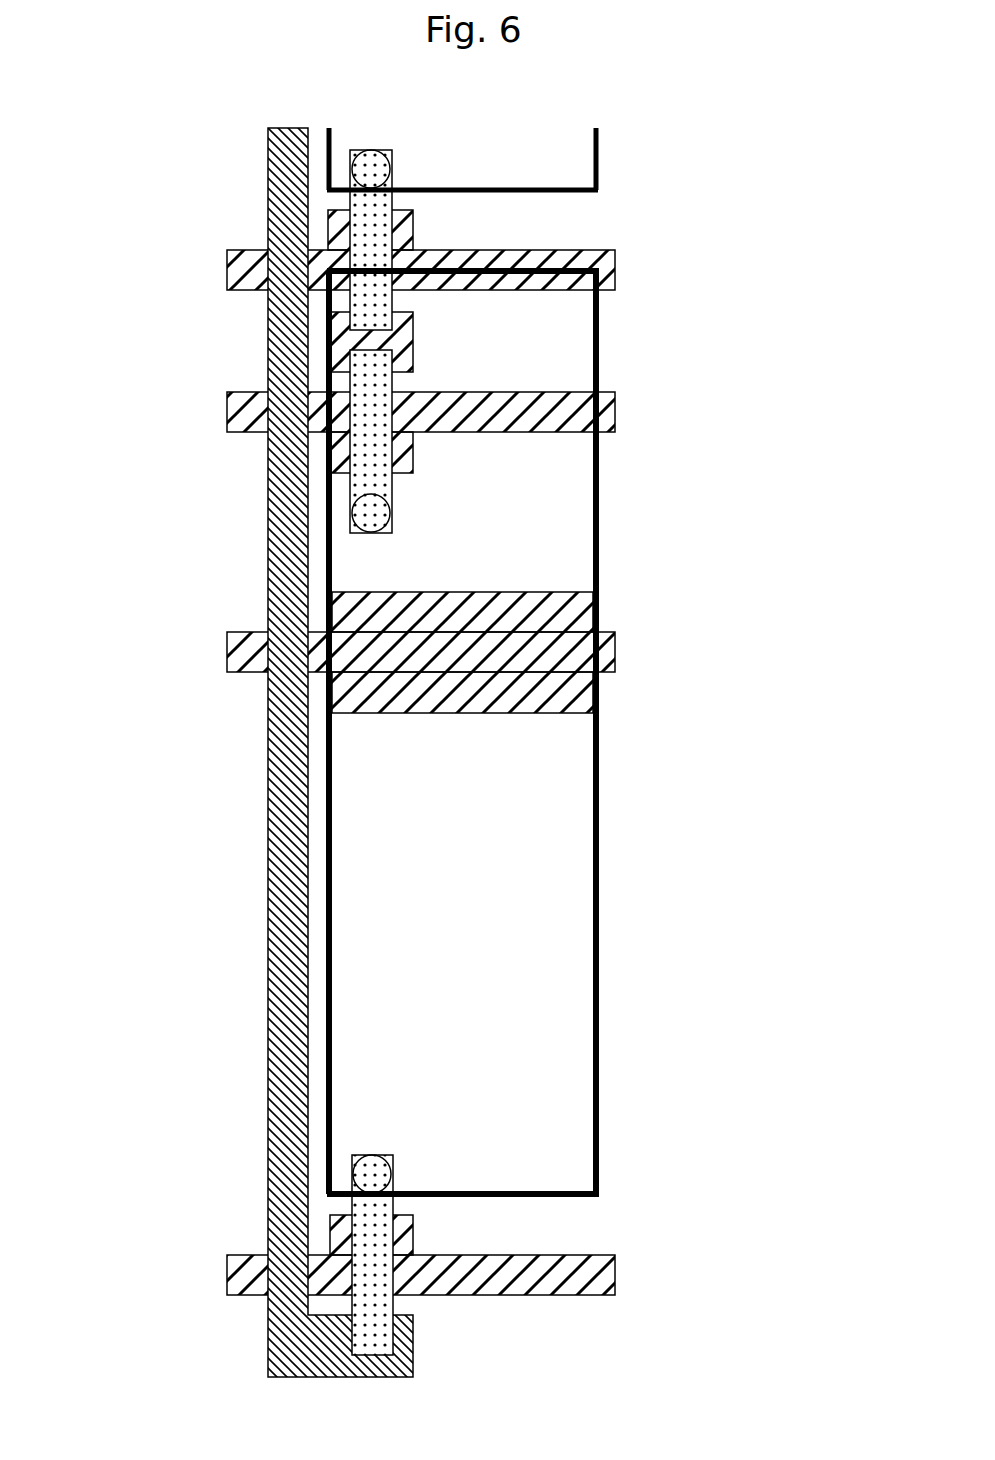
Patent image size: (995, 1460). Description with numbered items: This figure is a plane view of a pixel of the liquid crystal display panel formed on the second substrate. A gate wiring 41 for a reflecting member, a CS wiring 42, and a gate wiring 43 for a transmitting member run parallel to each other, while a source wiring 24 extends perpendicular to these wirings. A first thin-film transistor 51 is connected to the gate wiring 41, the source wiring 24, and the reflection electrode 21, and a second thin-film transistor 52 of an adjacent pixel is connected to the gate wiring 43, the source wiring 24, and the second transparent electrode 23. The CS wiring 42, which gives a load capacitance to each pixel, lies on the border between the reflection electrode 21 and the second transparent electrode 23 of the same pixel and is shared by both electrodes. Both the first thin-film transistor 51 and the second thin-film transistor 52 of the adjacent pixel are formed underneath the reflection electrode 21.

The reflection electrode 21 is at (560, 492).
The second transparent electrode 23 is at (572, 937).
The source wiring 24 is at (290, 659).
The gate wiring for a reflecting member 41 is at (553, 407).
The CS wiring 42 is at (600, 653).
The gate wiring for a transmitting member 43 is at (540, 1270).
The first thin-film transistor 51 is at (370, 388).
The second thin-film transistor 52 is at (373, 245).